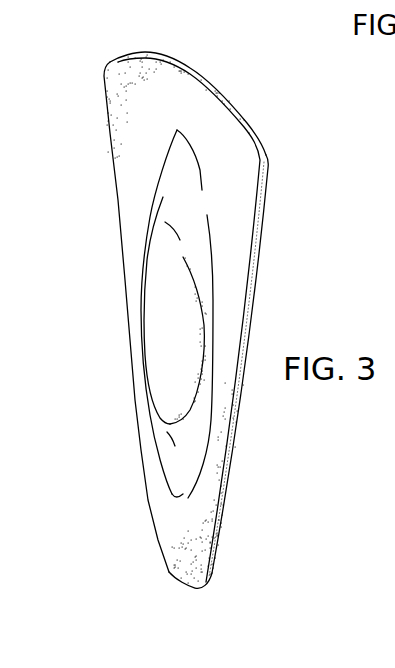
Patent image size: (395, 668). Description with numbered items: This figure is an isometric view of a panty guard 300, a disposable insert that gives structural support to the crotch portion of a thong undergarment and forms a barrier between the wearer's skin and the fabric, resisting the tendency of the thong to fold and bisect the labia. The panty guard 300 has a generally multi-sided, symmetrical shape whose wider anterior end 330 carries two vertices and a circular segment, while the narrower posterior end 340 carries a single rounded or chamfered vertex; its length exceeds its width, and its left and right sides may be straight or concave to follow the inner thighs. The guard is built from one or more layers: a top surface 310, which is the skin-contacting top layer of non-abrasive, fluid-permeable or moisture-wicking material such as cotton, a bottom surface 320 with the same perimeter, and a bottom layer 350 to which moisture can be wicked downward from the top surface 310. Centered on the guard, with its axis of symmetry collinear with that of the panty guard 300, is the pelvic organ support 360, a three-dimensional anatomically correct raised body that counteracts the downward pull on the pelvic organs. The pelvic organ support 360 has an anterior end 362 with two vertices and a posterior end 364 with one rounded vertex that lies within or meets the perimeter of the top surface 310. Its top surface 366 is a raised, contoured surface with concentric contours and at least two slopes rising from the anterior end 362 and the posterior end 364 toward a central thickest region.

The panty guard 300 is at (163, 322).
The top surface 310 is at (109, 132).
The bottom surface 320 is at (264, 218).
The anterior end 330 is at (181, 55).
The posterior end 340 is at (181, 588).
The bottom layer 350 is at (248, 120).
The pelvic organ support 360 is at (146, 373).
The anterior end of the pelvic organ support 362 is at (183, 126).
The posterior end of the pelvic organ support 364 is at (185, 512).
The top surface of the pelvic organ support 366 is at (147, 337).